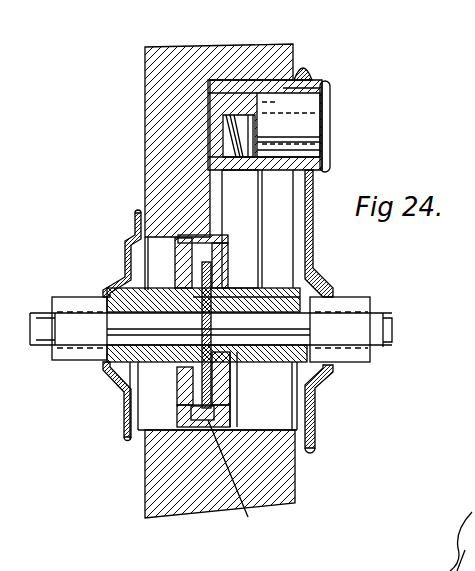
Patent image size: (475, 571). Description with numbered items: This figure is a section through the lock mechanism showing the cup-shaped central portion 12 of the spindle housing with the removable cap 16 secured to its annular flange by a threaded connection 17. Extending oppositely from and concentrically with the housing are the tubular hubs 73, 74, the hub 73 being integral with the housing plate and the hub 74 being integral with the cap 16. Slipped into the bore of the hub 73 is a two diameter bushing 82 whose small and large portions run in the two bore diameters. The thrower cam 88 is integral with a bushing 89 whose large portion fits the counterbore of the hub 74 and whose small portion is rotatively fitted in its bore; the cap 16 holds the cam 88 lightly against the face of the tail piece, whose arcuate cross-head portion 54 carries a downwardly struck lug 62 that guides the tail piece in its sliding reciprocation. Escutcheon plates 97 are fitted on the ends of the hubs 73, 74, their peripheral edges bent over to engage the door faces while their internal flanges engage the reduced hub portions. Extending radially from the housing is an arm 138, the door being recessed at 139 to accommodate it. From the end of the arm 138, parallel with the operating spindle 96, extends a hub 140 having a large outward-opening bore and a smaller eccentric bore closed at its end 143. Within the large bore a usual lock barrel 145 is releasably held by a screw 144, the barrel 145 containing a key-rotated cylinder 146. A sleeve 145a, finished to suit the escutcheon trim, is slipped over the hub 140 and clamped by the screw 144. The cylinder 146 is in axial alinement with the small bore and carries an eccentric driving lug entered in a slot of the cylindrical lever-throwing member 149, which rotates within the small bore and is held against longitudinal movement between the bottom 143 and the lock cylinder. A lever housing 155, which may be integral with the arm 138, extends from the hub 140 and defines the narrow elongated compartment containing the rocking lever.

The arm 138 is at (215, 178).
The recess 139 is at (220, 113).
The closed end 143 is at (230, 152).
The screw 144 is at (227, 88).
The hub 140 is at (266, 80).
The sleeve 145a is at (322, 86).
The lock barrel 145 is at (323, 140).
The cylinder 146 is at (310, 126).
The lever-throwing member 149 is at (225, 133).
The lever housing 155 is at (257, 229).
The tubular hub 73 is at (262, 292).
The two diameter bushing 82 is at (291, 297).
The tubular hub 74 is at (167, 290).
The lug 62 is at (214, 290).
The operating spindle 96 is at (393, 325).
The bushing 89 is at (183, 354).
The cap 16 is at (180, 403).
The threaded connection 17 is at (185, 419).
The central portion 12 is at (212, 400).
The escutcheon plates 97 is at (126, 402).
The thrower cam 88 is at (197, 415).
The arcuate cross-head portion 54 is at (237, 476).